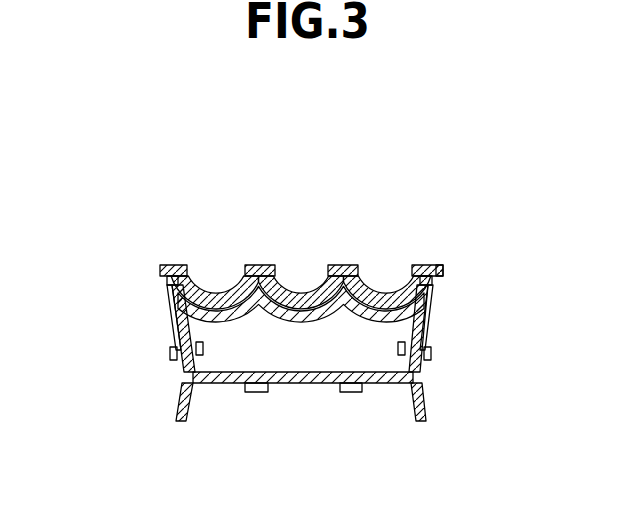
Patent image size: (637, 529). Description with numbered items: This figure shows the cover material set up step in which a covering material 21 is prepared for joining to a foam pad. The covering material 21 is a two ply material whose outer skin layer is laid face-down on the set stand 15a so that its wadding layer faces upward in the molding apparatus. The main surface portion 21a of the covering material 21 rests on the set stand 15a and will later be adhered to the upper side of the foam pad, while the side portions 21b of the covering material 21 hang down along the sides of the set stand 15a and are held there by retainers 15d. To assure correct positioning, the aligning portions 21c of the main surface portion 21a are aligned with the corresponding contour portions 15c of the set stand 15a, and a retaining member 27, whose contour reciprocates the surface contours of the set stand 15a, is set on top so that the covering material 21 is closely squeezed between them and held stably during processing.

The set stand 15a is at (237, 353).
The contour portions 15c is at (236, 282).
The retainers 15d is at (202, 348).
The covering material 21 is at (160, 268).
The main surface portion 21a is at (220, 294).
The side portions 21b is at (170, 320).
The aligning portions 21c is at (168, 268).
The retaining member 27 is at (440, 266).